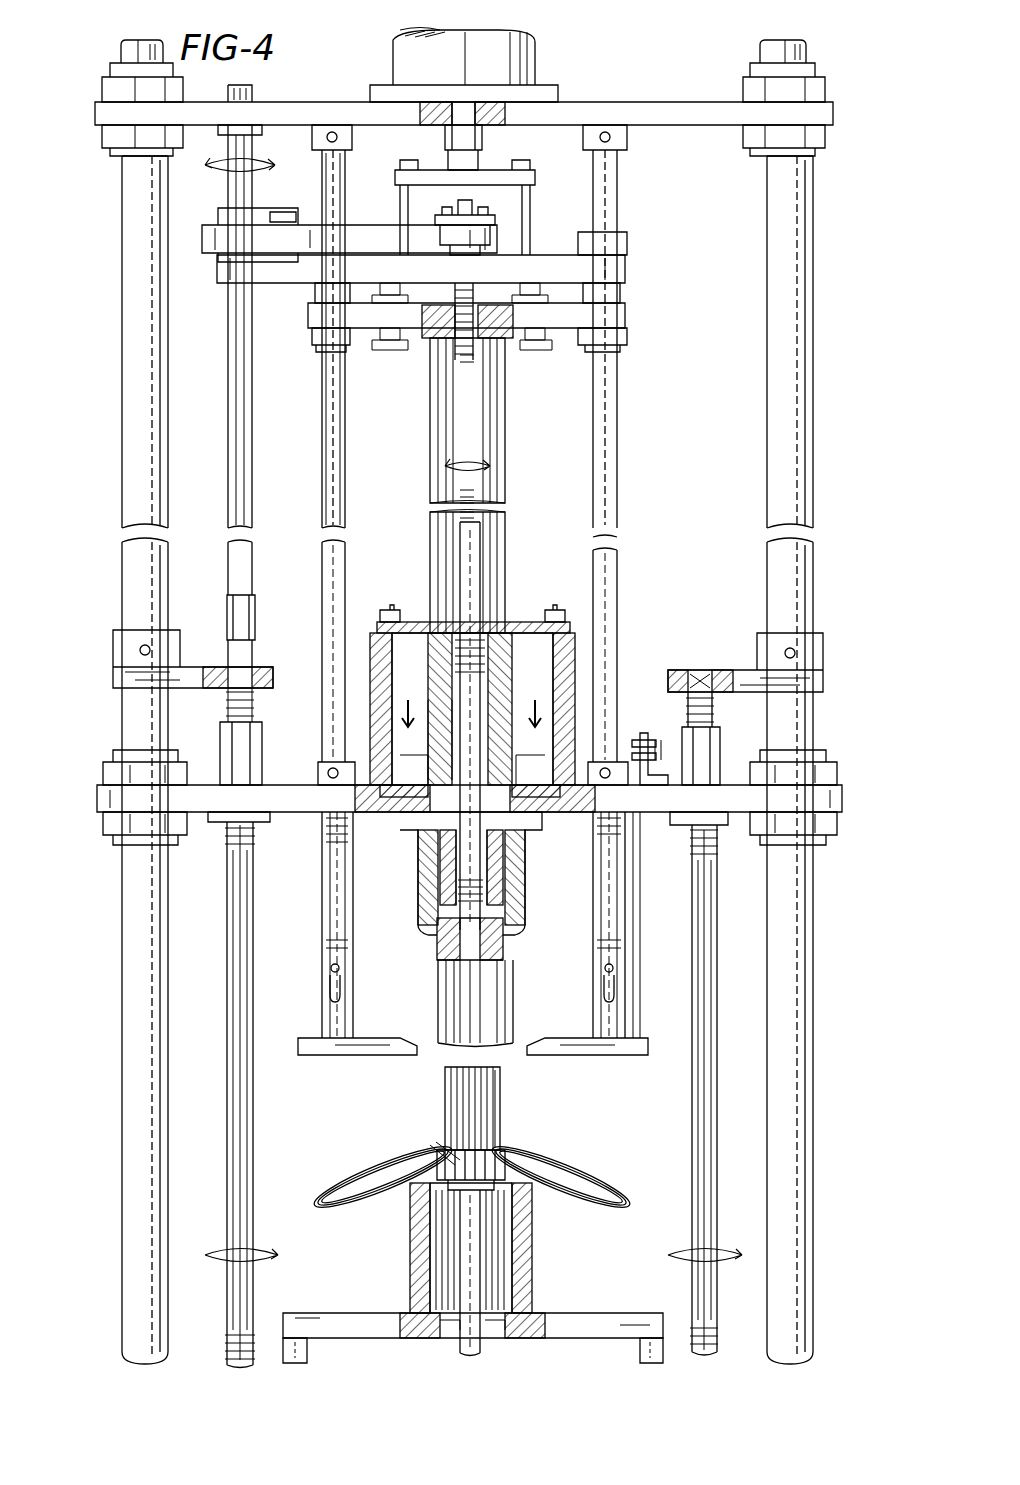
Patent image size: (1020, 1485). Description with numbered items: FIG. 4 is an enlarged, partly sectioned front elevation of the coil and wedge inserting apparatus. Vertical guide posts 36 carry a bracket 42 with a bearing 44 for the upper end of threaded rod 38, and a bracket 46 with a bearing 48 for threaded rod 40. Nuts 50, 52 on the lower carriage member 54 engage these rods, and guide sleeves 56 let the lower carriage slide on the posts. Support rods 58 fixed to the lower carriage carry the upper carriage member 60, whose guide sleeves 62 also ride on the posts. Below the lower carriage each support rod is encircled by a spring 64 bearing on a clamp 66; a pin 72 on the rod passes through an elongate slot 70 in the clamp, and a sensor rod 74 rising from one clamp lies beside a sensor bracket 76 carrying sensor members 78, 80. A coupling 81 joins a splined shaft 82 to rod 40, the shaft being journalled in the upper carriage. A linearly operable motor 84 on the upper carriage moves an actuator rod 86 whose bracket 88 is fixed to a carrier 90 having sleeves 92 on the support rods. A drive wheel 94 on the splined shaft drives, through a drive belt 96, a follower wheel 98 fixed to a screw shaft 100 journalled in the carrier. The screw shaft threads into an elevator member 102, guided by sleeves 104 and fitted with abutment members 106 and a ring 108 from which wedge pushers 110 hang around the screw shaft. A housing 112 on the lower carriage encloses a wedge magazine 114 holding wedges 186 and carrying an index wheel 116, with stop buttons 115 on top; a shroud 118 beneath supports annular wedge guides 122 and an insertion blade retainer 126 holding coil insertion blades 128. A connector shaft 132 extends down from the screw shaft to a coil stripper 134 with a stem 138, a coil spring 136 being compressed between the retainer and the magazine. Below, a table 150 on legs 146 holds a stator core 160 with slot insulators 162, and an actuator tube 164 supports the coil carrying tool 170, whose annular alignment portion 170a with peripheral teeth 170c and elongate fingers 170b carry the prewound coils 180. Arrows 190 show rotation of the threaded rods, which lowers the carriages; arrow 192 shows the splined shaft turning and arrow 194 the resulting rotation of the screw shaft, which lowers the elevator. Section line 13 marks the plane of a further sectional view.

The section line 13 is at (477, 696).
The guide posts 36 is at (122, 545).
The threaded rod 38 is at (712, 890).
The threaded rod 40 is at (245, 892).
The bracket 42 is at (829, 663).
The bearing 44 is at (695, 668).
The bracket 46 is at (107, 663).
The bearing 48 is at (255, 670).
The nut 50 is at (720, 740).
The nut 52 is at (262, 750).
The lower carriage member 54 is at (97, 797).
The guide sleeves 56 is at (110, 756).
The support rods 58 is at (322, 545).
The upper carriage member 60 is at (665, 110).
The guide sleeves 62 is at (105, 160).
The elongate spring 64 is at (320, 840).
The clamp 66 is at (357, 1055).
The elongate slot 70 is at (328, 1000).
The pin 72 is at (332, 968).
The sensor rod 74 is at (640, 845).
The sensor bracket 76 is at (660, 775).
The sensor member 78 is at (645, 745).
The sensor member 80 is at (660, 738).
The coupling 81 is at (228, 615).
The splined shaft 82 is at (228, 545).
The linearly operable motor 84 is at (535, 72).
The actuator rod 86 is at (448, 150).
The bracket 88 is at (530, 190).
The carrier 90 is at (625, 270).
The sleeves 92 is at (615, 232).
The drive wheel 94 is at (205, 255).
The drive belt 96 is at (348, 235).
The follower wheel 98 is at (495, 225).
The screw shaft 100 is at (490, 498).
The elevator member 102 is at (625, 315).
The sleeves 104 is at (318, 345).
The abutment members 106 is at (380, 350).
The ring 108 is at (438, 330).
The wedge pushers 110 is at (430, 510).
The housing 112 is at (380, 630).
The wedge magazine 114 is at (420, 625).
The stop buttons 115 is at (390, 612).
The index wheel 116 is at (395, 800).
The shroud 118 is at (418, 870).
The wedge guides 122 is at (435, 900).
The insertion blade retainer 126 is at (495, 860).
The coil insertion blades 128 is at (445, 990).
The connector shaft 132 is at (478, 556).
The coil stripper 134 is at (500, 945).
The coil spring 136 is at (482, 660).
The stem 138 is at (490, 990).
The legs 146 is at (307, 1350).
The table 150 is at (340, 1310).
The stator core 160 is at (530, 1227).
The slot insulators 162 is at (425, 1227).
The actuator tube 164 is at (490, 1262).
The coil carrying tool 170 is at (434, 1093).
The annular alignment portion 170a is at (480, 1160).
The elongate fingers 170b is at (497, 1090).
The peripheral teeth 170c is at (441, 1146).
The prewound coils 180 is at (360, 1170).
The wedges 186 is at (432, 745).
The arrows 190 is at (225, 1262).
The arrow 192 is at (222, 168).
The arrow 194 is at (475, 465).